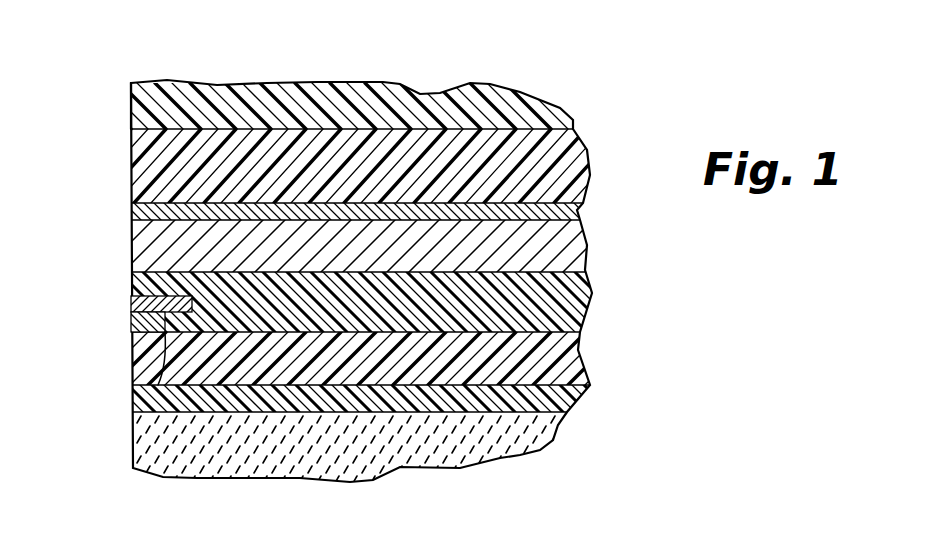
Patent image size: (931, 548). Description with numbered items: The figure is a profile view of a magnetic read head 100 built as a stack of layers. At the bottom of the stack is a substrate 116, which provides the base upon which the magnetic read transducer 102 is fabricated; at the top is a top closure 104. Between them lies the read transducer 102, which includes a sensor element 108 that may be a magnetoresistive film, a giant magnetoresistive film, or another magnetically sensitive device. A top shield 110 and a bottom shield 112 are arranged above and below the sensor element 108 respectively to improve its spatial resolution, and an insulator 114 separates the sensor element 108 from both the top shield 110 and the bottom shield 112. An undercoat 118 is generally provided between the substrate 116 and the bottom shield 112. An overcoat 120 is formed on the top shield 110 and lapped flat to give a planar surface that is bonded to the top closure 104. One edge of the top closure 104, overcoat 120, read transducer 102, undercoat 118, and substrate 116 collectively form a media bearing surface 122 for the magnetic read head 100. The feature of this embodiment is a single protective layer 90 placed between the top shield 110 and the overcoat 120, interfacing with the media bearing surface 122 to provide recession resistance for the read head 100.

The magnetic read head 100 is at (400, 72).
The top closure 104 is at (537, 105).
The overcoat 120 is at (567, 170).
The protective layer 90 is at (577, 207).
The top shield 110 is at (567, 248).
The insulator 114 is at (568, 305).
The sensor element 108 is at (133, 411).
The bottom shield 112 is at (568, 357).
The undercoat 118 is at (582, 398).
The substrate 116 is at (548, 445).
The media bearing surface 122 is at (131, 116).
The magnetic read transducer 102 is at (106, 222).